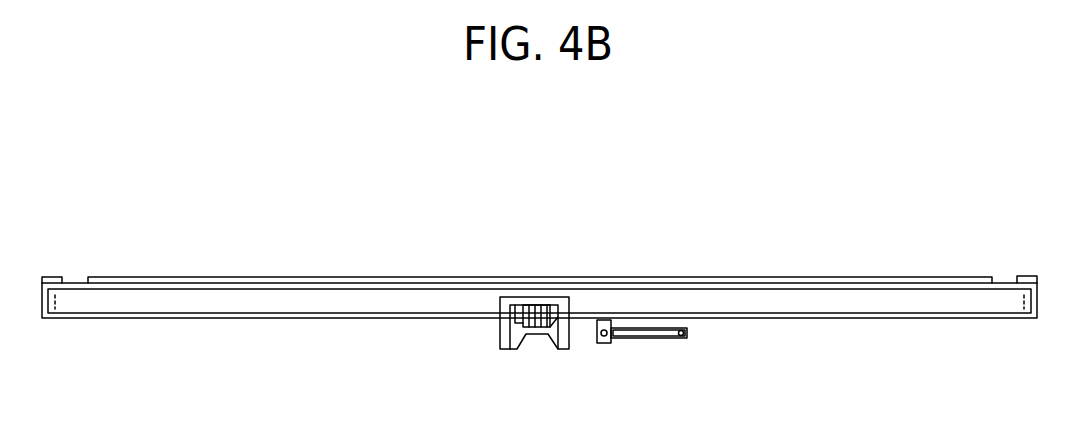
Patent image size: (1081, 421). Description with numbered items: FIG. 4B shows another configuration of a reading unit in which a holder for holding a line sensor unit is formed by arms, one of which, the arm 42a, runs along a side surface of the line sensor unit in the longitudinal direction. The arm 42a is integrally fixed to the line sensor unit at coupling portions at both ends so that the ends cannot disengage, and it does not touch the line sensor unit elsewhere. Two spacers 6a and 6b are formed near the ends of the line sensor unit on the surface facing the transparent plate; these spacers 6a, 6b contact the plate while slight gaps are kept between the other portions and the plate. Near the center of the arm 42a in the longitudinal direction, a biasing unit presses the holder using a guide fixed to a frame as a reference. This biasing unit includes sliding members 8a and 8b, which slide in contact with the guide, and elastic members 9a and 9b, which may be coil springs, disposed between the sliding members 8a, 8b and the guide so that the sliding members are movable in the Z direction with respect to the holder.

The spacer 6a is at (52, 277).
The spacer 6b is at (1027, 276).
The sliding member 8a is at (522, 318).
The sliding member 8b is at (522, 318).
The elastic member 9a is at (537, 275).
The elastic member 9b is at (532, 305).
The arm 42a is at (872, 308).